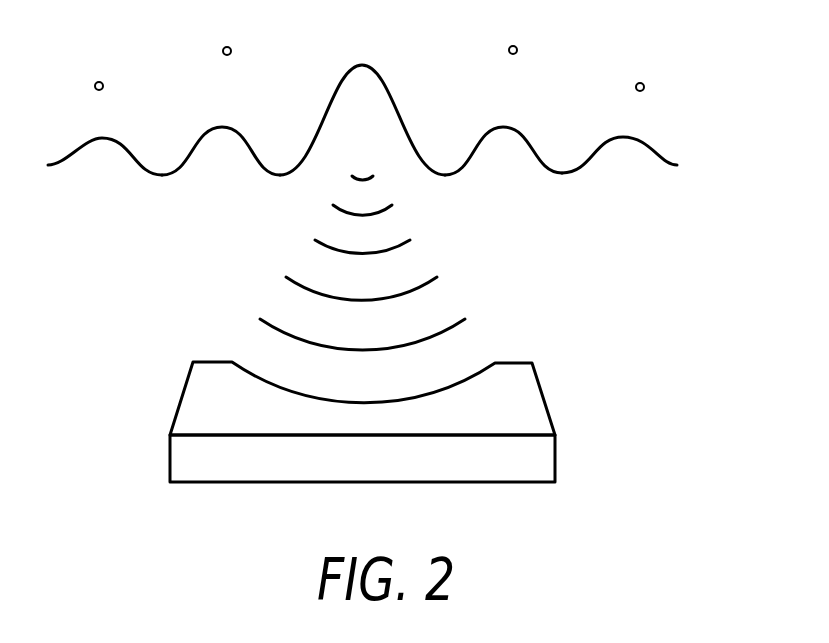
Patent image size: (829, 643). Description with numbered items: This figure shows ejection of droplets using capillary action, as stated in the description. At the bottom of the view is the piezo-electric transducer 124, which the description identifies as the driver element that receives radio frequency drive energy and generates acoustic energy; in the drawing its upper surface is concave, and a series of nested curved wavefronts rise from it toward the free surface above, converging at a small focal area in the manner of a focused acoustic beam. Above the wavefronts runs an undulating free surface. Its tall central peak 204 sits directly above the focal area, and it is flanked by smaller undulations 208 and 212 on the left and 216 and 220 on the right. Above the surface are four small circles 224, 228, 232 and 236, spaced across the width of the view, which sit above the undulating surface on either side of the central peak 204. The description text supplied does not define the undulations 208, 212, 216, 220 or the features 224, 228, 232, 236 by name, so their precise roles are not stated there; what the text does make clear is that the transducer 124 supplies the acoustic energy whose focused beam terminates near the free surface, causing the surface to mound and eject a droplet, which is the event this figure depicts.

The piezo-electric transducer 124 is at (557, 443).
The focal point peak of surface displacement 204 is at (382, 92).
The surface displacement peak 208 is at (113, 136).
The surface displacement peak 212 is at (240, 132).
The surface displacement peak 216 is at (525, 133).
The surface displacement peak 220 is at (642, 138).
The sensing point above surface 224 is at (103, 82).
The sensing point above surface 228 is at (231, 47).
The sensing point above surface 232 is at (517, 46).
The sensing point above surface 236 is at (644, 83).